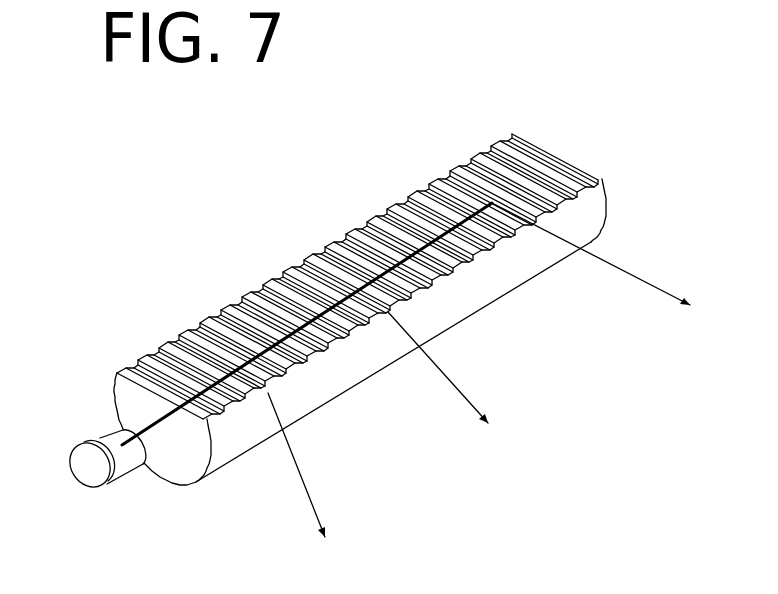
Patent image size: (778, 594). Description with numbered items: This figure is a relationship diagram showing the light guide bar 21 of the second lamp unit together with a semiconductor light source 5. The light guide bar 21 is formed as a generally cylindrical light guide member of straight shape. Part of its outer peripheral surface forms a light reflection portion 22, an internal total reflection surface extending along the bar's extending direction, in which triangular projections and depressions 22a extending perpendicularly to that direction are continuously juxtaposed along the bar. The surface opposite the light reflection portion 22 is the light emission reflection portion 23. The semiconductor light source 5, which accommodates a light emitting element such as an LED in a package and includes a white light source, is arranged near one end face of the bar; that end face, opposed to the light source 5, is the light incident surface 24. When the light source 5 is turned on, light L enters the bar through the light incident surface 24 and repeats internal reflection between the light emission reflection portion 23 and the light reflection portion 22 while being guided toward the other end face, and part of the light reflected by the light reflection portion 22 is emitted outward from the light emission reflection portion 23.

The light guide bar 21 is at (350, 184).
The light reflection portion 22 is at (560, 157).
The triangular projections and depressions 22a is at (267, 290).
The light emission reflection portion 23 is at (347, 387).
The light incident surface 24 is at (172, 453).
The semiconductor light source 5 is at (85, 438).
The light L is at (207, 317).